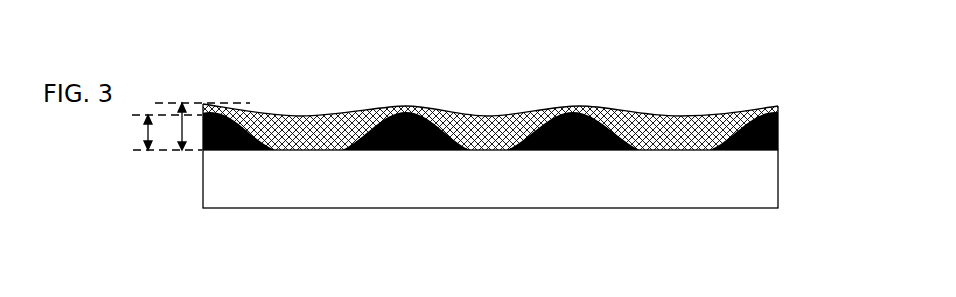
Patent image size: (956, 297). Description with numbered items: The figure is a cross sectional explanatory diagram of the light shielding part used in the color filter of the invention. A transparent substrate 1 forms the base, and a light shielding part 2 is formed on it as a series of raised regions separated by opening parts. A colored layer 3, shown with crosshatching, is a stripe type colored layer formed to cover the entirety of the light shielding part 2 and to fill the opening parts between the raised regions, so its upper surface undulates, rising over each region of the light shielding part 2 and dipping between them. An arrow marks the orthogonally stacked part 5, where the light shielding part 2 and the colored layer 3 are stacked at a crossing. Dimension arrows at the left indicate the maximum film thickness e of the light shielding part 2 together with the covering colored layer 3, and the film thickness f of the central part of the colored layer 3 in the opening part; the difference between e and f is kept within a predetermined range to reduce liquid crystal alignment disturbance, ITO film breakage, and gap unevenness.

The transparent substrate 1 is at (745, 178).
The light shielding part 2 is at (778, 140).
The colored layer 3 is at (290, 137).
The orthogonally stacked part 5 is at (409, 88).
The maximum film thickness e is at (180, 125).
The film thickness of central part f is at (146, 134).